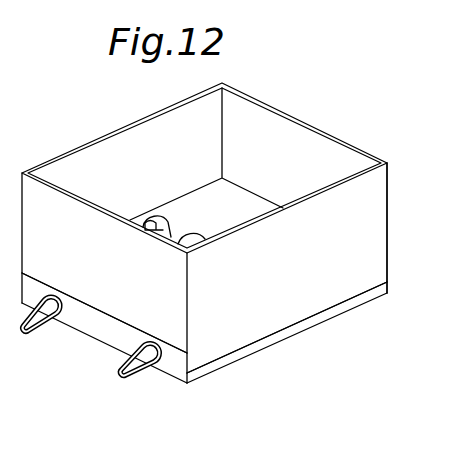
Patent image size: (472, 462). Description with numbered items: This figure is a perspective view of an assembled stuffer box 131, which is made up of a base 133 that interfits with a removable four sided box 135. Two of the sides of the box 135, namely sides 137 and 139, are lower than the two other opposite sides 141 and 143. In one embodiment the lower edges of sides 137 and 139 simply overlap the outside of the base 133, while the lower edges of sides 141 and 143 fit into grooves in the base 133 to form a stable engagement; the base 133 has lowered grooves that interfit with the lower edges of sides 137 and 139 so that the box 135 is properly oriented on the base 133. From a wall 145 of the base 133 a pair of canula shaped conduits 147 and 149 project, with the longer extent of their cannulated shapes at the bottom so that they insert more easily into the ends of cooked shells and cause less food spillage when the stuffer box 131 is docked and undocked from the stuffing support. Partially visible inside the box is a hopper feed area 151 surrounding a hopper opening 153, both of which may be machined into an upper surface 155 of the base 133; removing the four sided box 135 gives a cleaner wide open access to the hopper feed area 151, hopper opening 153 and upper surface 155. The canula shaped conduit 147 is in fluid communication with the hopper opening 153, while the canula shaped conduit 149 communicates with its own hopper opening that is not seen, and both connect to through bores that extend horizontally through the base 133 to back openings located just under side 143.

The stuffer box 131 is at (85, 133).
The base 133 is at (205, 375).
The four sided box 135 is at (388, 197).
The side 137 is at (132, 185).
The side 139 is at (322, 274).
The side 141 is at (129, 269).
The side 143 is at (277, 146).
The wall 145 is at (115, 338).
The canula shaped conduit 147 is at (63, 318).
The canula shaped conduit 149 is at (163, 360).
The hopper feed area 151 is at (152, 222).
The hopper opening 153 is at (160, 228).
The upper surface 155 is at (262, 208).